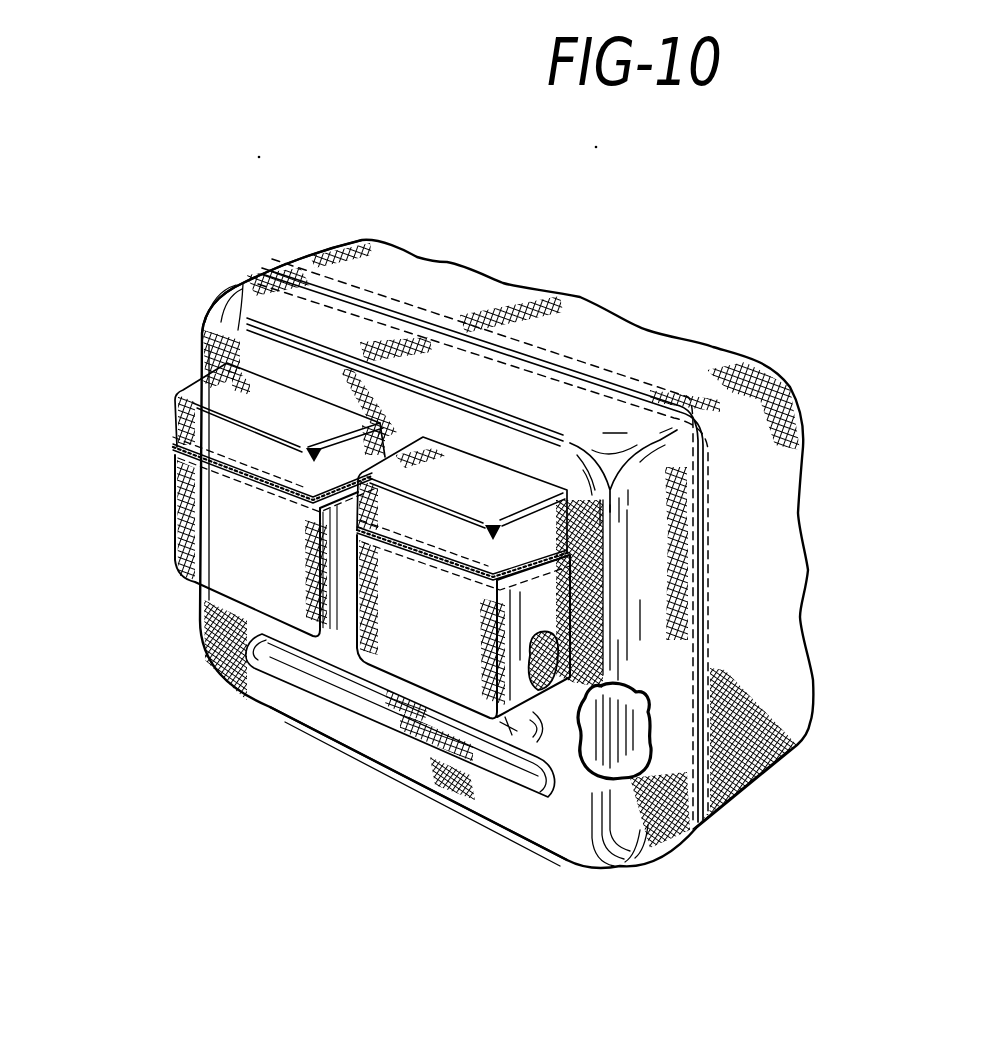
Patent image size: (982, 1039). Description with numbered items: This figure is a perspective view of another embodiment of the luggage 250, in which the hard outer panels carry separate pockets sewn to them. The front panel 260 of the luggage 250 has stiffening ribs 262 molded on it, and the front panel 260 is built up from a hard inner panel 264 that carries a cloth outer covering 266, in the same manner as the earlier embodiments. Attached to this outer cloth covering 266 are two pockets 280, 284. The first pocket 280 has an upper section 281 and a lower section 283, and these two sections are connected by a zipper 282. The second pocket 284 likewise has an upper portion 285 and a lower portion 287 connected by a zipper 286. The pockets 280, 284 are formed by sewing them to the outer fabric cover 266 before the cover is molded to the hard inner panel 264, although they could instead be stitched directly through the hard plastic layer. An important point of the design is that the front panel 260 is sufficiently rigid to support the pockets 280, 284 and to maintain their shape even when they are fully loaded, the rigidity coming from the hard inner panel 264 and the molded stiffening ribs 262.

The luggage 250 is at (347, 227).
The front panel 260 is at (200, 338).
The stiffening ribs 262 is at (517, 767).
The hard inner panel 264 is at (630, 737).
The cloth outer covering 266 is at (573, 843).
The pocket 280 is at (217, 517).
The upper section 281 is at (177, 413).
The zipper 282 is at (173, 443).
The lower section 283 is at (173, 523).
The pocket 284 is at (546, 617).
The upper portion 285 is at (543, 521).
The zipper 286 is at (547, 558).
The lower portion 287 is at (540, 595).